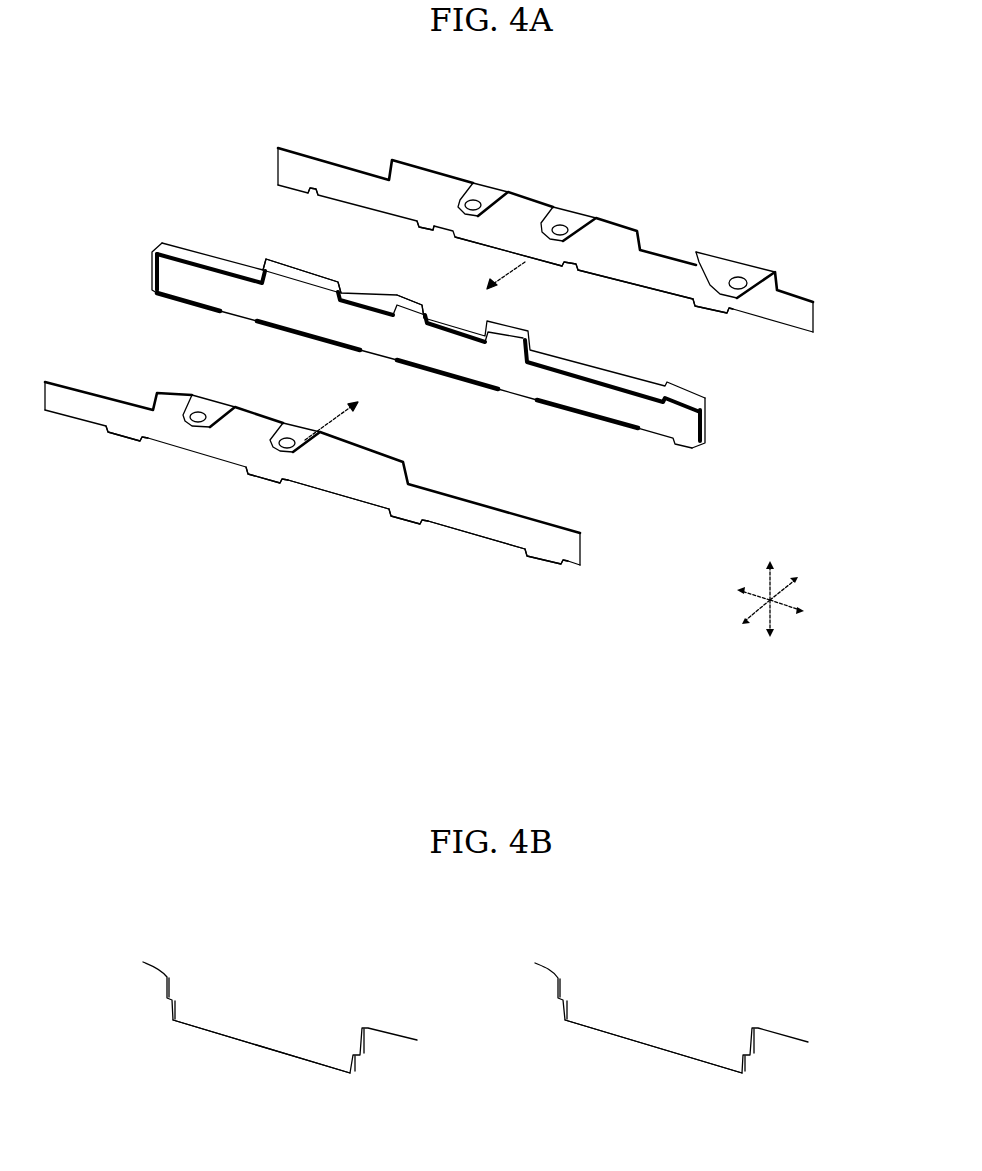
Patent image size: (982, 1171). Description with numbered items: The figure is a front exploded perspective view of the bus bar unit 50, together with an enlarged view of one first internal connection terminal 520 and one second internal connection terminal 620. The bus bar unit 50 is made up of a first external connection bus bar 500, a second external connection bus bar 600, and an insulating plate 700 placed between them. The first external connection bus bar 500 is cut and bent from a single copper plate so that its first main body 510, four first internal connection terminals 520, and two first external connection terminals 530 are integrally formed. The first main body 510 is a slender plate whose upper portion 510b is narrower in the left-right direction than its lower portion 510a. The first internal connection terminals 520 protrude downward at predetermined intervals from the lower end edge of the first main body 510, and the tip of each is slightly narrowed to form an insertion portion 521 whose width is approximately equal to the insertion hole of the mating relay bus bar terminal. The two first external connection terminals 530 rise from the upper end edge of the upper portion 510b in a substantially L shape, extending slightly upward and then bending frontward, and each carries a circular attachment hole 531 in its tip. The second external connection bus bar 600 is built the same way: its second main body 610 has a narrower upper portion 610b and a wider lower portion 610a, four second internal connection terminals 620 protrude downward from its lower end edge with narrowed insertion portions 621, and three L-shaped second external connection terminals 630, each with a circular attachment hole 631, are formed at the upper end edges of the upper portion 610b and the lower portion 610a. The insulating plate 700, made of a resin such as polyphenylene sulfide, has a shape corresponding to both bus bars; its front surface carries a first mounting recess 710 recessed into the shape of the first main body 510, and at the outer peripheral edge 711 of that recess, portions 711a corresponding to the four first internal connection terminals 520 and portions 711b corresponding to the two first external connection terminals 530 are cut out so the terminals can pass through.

In FIG. 4A, the bus bar unit 50 is at (715, 173).
In FIG. 4A, the first external connection bus bar 500 is at (97, 390).
In FIG. 4A, the first main body 510 is at (208, 446).
In FIG. 4A, the lower portion 510a is at (477, 524).
In FIG. 4A, the upper portion 510b is at (362, 464).
In FIG. 4A, the first internal connection terminal 520 is at (128, 436).
In FIG. 4B, the first internal connection terminal 520 is at (160, 1004).
In FIG. 4B, the insertion portion 521 is at (253, 1037).
In FIG. 4A, the first external connection terminal 530 is at (220, 403).
In FIG. 4A, the attachment hole 531 is at (197, 410).
In FIG. 4A, the second external connection bus bar 600 is at (335, 149).
In FIG. 4A, the second main body 610 is at (345, 193).
In FIG. 4A, the lower portion 610a is at (663, 276).
In FIG. 4A, the upper portion 610b is at (625, 243).
In FIG. 4A, the second internal connection terminal 620 is at (313, 194).
In FIG. 4B, the second internal connection terminal 620 is at (553, 1004).
In FIG. 4B, the insertion portion 621 is at (647, 1037).
In FIG. 4A, the second external connection terminal 630 is at (488, 192).
In FIG. 4A, the attachment hole 631 is at (471, 199).
In FIG. 4A, the insulating plate 700 is at (187, 243).
In FIG. 4A, the first mounting recess 710 is at (610, 406).
In FIG. 4A, the outer peripheral edge 711 is at (152, 262).
In FIG. 4A, the portions corresponding to first internal connection terminals 711a is at (233, 313).
In FIG. 4A, the portions corresponding to first external connection terminals 711b is at (314, 278).